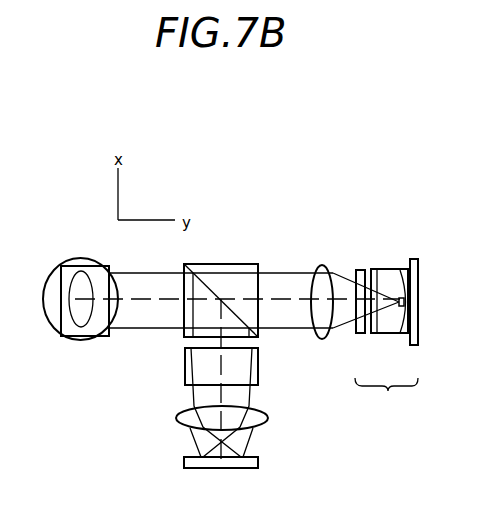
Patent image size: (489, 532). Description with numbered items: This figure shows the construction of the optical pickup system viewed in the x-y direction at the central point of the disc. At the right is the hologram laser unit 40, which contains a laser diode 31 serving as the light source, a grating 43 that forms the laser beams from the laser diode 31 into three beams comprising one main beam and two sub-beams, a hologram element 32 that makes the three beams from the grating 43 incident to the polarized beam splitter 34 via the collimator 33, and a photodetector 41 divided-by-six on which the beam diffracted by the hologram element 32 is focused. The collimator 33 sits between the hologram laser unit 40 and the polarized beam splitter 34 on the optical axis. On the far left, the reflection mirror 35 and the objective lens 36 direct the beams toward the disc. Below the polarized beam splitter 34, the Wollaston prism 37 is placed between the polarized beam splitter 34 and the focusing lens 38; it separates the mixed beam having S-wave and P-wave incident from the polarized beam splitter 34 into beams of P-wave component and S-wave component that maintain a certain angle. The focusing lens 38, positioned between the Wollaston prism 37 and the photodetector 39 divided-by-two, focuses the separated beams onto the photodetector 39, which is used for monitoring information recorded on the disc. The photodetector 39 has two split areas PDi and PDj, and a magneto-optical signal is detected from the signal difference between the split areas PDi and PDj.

The laser diode 31 is at (399, 268).
The hologram element 32 is at (363, 334).
The collimator 33 is at (320, 265).
The polarized beam splitter 34 is at (229, 263).
The reflection mirror 35 is at (62, 296).
The objective lens 36 is at (80, 340).
The Wollaston prism 37 is at (258, 365).
The focusing lens 38 is at (266, 417).
The photodetector divided-by-two 39 is at (258, 459).
The hologram laser unit 40 is at (386, 397).
The photodetector divided-by-six 41 is at (408, 337).
The grating 43 is at (373, 267).
The split area PDi is at (202, 468).
The split area PDj is at (245, 468).